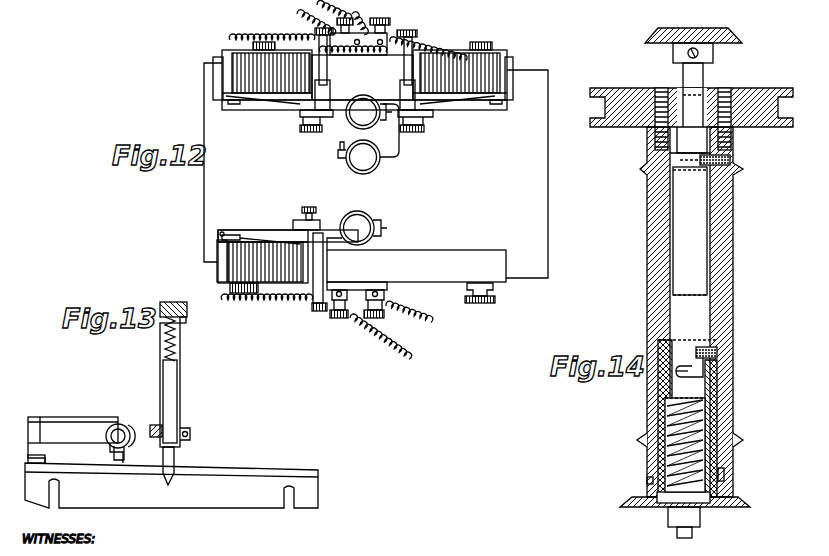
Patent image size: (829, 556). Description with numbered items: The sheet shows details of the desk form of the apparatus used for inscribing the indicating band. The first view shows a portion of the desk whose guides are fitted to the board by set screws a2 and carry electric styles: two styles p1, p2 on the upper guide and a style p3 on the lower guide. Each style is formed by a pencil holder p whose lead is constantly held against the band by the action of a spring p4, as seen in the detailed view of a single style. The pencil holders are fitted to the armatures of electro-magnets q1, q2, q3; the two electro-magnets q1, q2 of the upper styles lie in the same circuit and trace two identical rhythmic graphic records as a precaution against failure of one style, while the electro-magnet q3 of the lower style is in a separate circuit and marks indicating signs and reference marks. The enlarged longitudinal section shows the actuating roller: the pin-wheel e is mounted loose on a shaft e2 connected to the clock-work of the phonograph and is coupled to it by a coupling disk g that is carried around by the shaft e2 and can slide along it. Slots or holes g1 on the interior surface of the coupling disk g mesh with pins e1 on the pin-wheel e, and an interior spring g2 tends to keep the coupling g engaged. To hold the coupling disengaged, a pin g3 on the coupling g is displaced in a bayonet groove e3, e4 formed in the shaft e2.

In FIG. 12, the set screws a2 is at (260, 45).
In FIG. 12, the electro-magnet q1 is at (272, 78).
In FIG. 12, the electro-magnet q2 is at (477, 87).
In FIG. 12, the electro-magnet q3 is at (286, 278).
In FIG. 12, the style p1 is at (357, 115).
In FIG. 12, the style p2 is at (370, 160).
In FIG. 12, the style p3 is at (363, 221).
In FIG. 13, the pencil holder p is at (183, 408).
In FIG. 13, the spring p4 is at (180, 352).
In FIG. 14, the pin-wheel e is at (733, 308).
In FIG. 14, the pins e1 is at (725, 478).
In FIG. 14, the shaft e2 is at (690, 224).
In FIG. 14, the bayonet groove e3 is at (712, 367).
In FIG. 14, the bayonet groove e4 is at (680, 374).
In FIG. 14, the coupling disk g is at (733, 393).
In FIG. 14, the slots or holes g1 is at (647, 481).
In FIG. 14, the interior spring g2 is at (678, 438).
In FIG. 14, the pin g3 is at (720, 350).